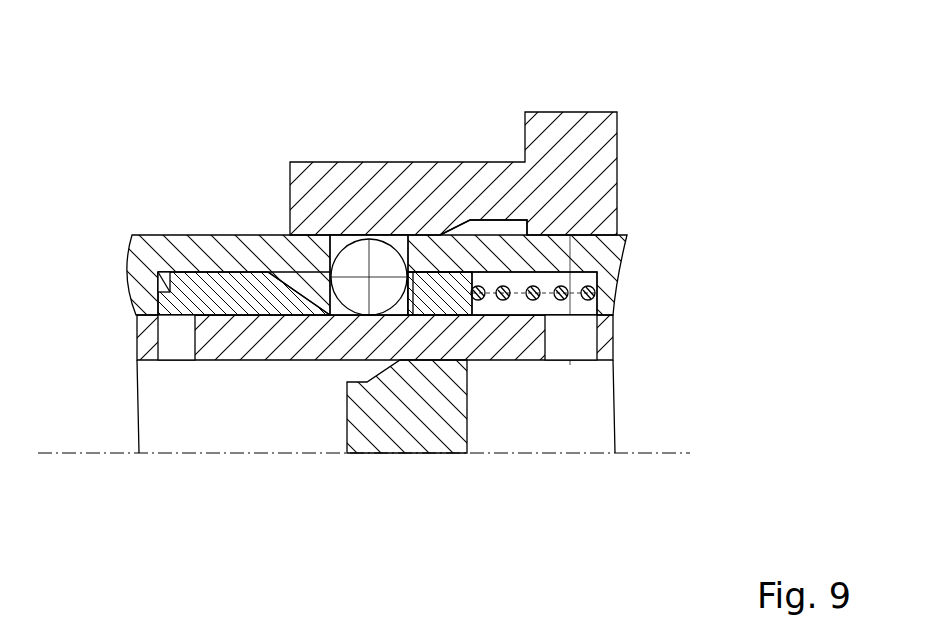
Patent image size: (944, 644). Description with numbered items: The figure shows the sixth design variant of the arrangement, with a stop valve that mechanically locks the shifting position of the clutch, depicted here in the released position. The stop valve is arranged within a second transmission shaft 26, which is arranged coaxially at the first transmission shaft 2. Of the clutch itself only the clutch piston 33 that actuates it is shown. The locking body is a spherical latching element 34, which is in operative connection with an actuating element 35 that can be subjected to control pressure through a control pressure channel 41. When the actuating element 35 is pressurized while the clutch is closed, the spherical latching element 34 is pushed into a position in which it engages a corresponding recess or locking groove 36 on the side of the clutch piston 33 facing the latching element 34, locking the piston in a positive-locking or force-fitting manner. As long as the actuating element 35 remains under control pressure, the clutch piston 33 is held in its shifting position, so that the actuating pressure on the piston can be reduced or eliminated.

The first transmission shaft 2 is at (333, 322).
The second transmission shaft 26 is at (262, 250).
The clutch piston 33 is at (405, 195).
The spherical latching element 34 is at (355, 260).
The actuating element 35 is at (252, 298).
The locking groove 36 is at (479, 224).
The control pressure channel 41 is at (176, 300).